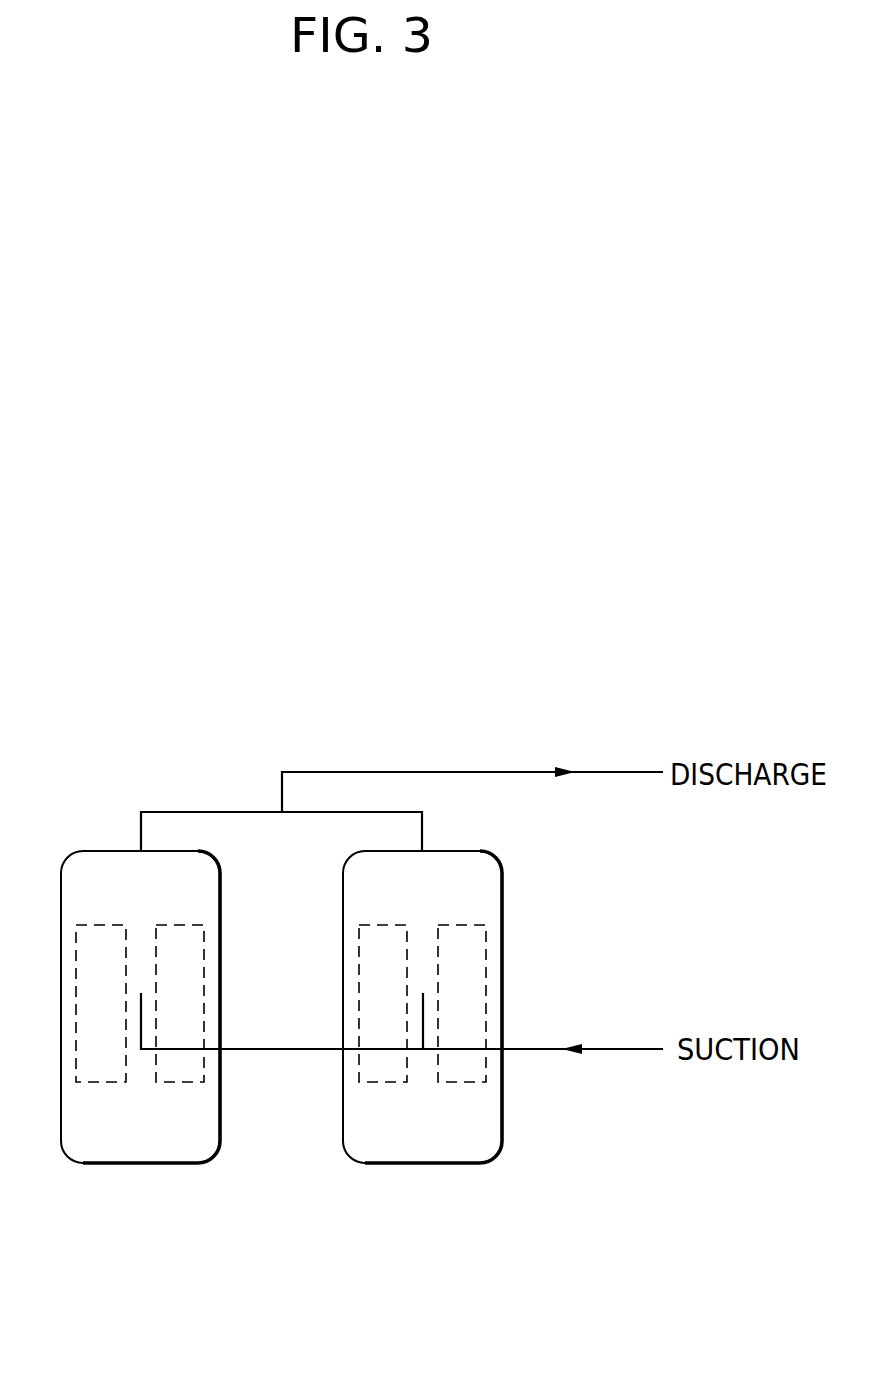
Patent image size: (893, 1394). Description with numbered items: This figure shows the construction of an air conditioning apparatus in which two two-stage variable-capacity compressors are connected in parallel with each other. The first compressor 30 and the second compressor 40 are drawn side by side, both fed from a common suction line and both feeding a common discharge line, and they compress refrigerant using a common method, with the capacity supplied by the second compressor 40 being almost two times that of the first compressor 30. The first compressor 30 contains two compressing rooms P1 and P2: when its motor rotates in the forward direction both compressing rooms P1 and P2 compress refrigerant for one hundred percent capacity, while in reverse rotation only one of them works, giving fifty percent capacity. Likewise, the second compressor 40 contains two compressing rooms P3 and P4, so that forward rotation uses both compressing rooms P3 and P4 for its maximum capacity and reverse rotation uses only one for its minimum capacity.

The first compressor 30 is at (140, 1152).
The second compressor 40 is at (425, 1153).
The compressing room P1 is at (102, 1073).
The compressing room P2 is at (180, 1073).
The compressing room P3 is at (383, 1073).
The compressing room P4 is at (460, 1073).